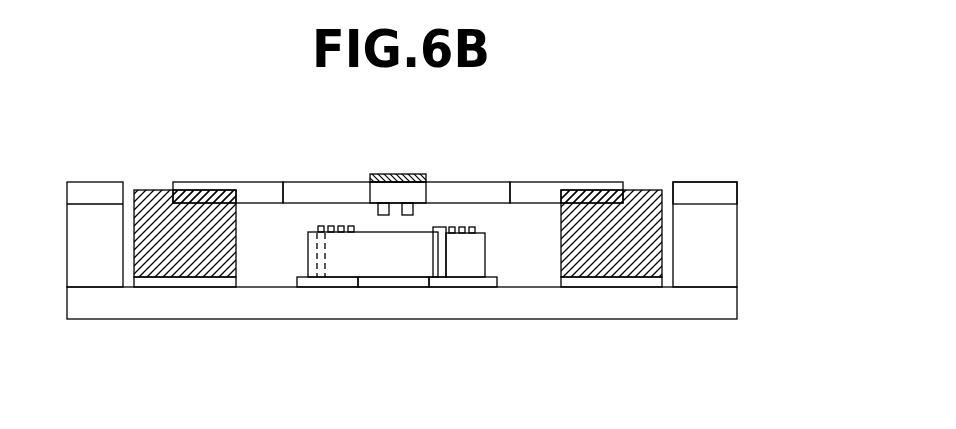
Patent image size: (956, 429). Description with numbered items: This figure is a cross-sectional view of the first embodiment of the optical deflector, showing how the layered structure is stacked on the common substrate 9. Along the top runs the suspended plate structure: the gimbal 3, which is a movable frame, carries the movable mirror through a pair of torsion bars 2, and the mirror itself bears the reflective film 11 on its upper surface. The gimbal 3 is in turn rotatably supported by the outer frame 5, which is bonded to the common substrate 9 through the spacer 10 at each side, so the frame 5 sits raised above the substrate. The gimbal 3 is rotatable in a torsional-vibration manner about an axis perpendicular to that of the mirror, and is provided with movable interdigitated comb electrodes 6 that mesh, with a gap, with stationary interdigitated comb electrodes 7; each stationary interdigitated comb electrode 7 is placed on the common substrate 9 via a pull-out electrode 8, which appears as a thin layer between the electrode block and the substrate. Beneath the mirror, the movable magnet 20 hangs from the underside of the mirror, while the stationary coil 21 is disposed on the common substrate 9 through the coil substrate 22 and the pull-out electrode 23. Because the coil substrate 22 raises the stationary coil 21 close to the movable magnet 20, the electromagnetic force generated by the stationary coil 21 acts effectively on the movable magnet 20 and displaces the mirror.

The torsion bar 2 is at (320, 188).
The gimbal 3 is at (252, 182).
The frame 5 is at (700, 182).
The movable interdigitated comb electrode 6 is at (174, 204).
The stationary interdigitated comb electrode 7 is at (157, 207).
The pull-out electrode 8 is at (185, 288).
The common substrate 9 is at (242, 315).
The spacer 10 is at (97, 262).
The reflective film 11 is at (400, 174).
The movable magnet 20 is at (427, 205).
The stationary coil 21 is at (473, 227).
The coil substrate 22 is at (390, 262).
The pull-out electrode 23 is at (320, 290).